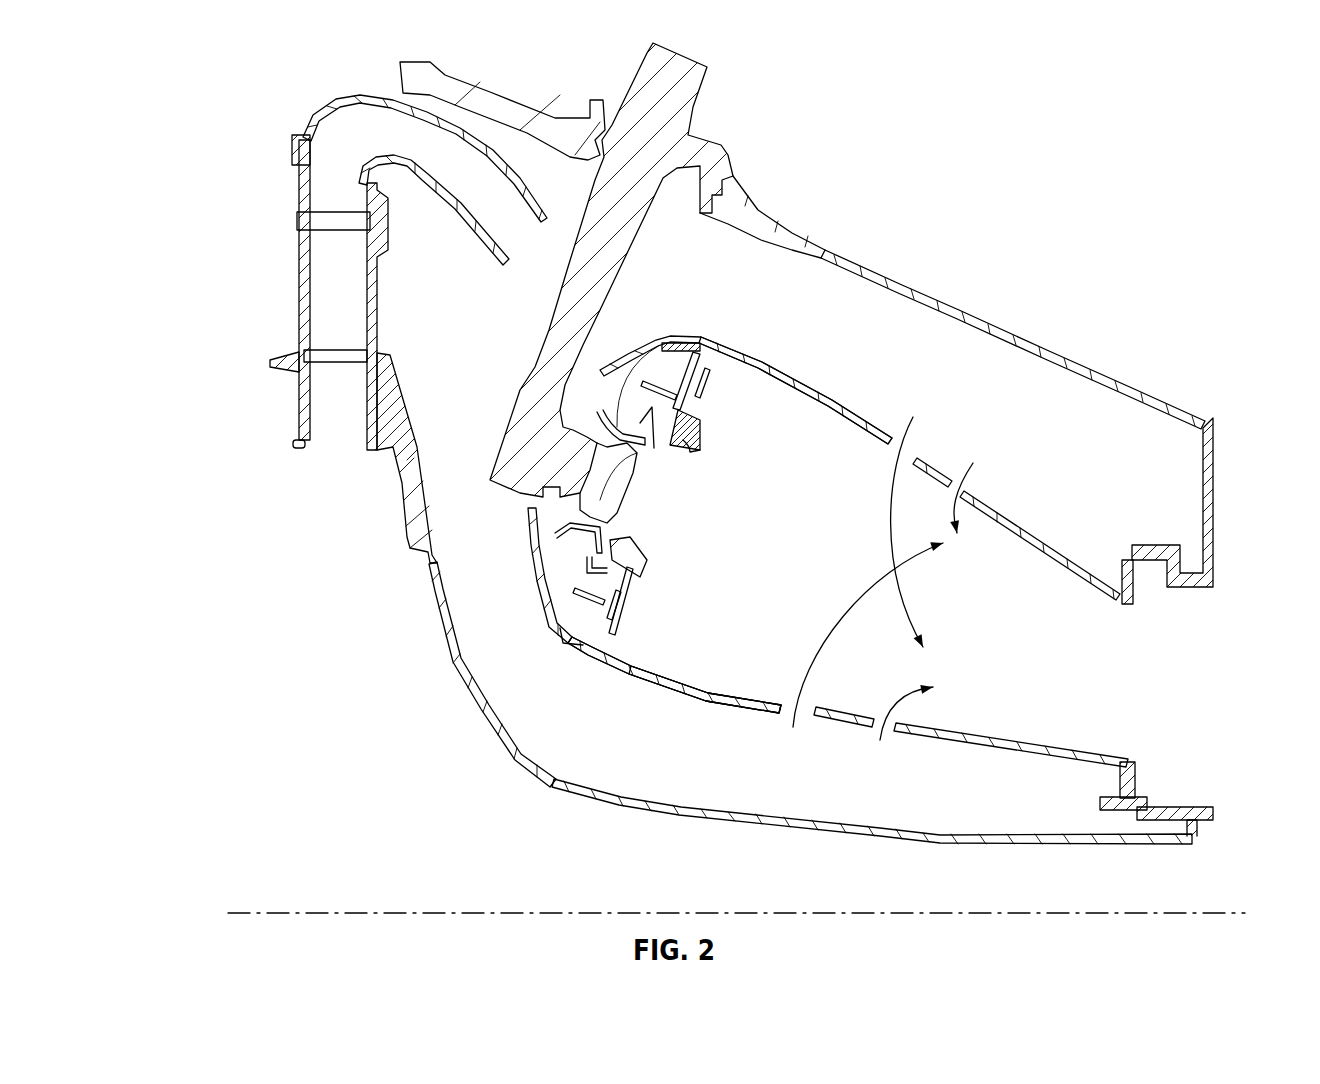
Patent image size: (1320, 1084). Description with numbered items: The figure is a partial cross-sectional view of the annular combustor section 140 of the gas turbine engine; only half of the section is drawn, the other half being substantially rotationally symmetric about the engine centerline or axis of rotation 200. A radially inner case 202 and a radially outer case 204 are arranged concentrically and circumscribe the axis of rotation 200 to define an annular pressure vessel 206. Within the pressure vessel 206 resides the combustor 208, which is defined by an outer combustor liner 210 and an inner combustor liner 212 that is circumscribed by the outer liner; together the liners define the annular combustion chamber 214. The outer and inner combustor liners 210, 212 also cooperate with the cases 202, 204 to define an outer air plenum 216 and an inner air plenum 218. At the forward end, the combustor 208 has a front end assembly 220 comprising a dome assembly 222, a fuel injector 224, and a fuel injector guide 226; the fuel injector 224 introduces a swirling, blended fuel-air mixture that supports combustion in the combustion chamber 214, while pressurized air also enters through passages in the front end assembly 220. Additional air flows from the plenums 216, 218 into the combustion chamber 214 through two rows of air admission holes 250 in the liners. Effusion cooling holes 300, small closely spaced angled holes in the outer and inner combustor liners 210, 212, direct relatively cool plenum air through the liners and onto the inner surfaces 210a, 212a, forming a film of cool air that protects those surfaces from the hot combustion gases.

The combustor section 140 is at (233, 178).
The axis of rotation 200 is at (272, 912).
The radially inner case 202 is at (628, 808).
The radially outer case 204 is at (798, 242).
The annular pressure vessel 206 is at (508, 725).
The combustor 208 is at (665, 695).
The outer combustor liner 210 is at (759, 360).
The inner surface of the outer combustor liner 210a is at (830, 410).
The inner combustor liner 212 is at (760, 713).
The inner surface of the inner combustor liner 212a is at (725, 694).
The annular combustion chamber 214 is at (702, 645).
The outer air plenum 216 is at (1180, 460).
The inner air plenum 218 is at (595, 708).
The front end assembly 220 is at (514, 304).
The dome assembly 222 is at (527, 540).
The fuel injector 224 is at (507, 416).
The fuel injector guide 226 is at (683, 340).
The air admission holes 250 is at (907, 467).
The effusion cooling holes 300 is at (1020, 527).